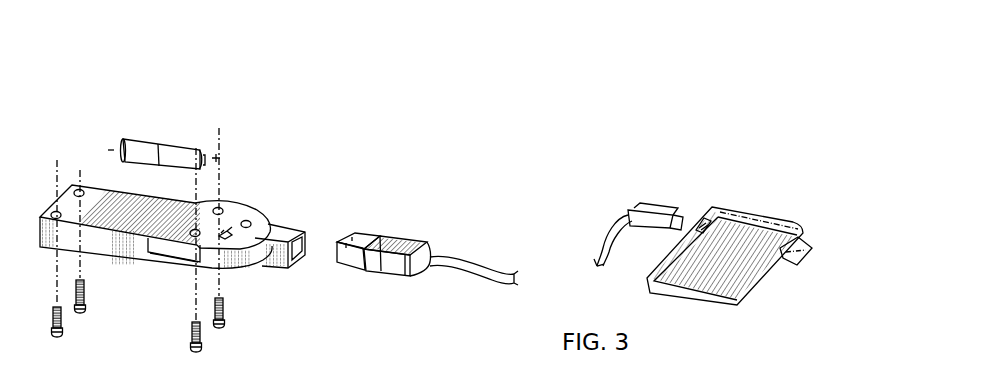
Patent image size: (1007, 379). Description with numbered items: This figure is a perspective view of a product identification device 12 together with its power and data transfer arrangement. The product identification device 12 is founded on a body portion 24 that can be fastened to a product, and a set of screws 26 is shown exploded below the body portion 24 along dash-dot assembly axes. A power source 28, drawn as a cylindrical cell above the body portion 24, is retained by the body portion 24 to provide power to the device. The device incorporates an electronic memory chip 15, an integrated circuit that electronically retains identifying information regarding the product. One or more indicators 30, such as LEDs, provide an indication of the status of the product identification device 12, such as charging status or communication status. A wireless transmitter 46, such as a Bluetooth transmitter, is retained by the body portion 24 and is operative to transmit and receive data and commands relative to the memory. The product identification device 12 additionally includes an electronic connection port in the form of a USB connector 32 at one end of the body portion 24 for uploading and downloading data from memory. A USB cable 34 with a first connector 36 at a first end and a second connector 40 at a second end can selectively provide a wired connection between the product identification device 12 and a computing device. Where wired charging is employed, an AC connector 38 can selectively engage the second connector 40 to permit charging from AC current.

The product identification device 12 is at (176, 214).
The electronic memory chip 15 is at (168, 250).
The body portion 24 is at (132, 218).
The screws 26 is at (203, 340).
The power source 28 is at (150, 138).
The indicator 30 is at (244, 221).
The USB connector 32 is at (287, 220).
The USB cable 34 is at (480, 262).
The first connector 36 is at (370, 233).
The AC connector 38 is at (762, 212).
The second connector 40 is at (654, 205).
The wireless transmitter 46 is at (232, 240).